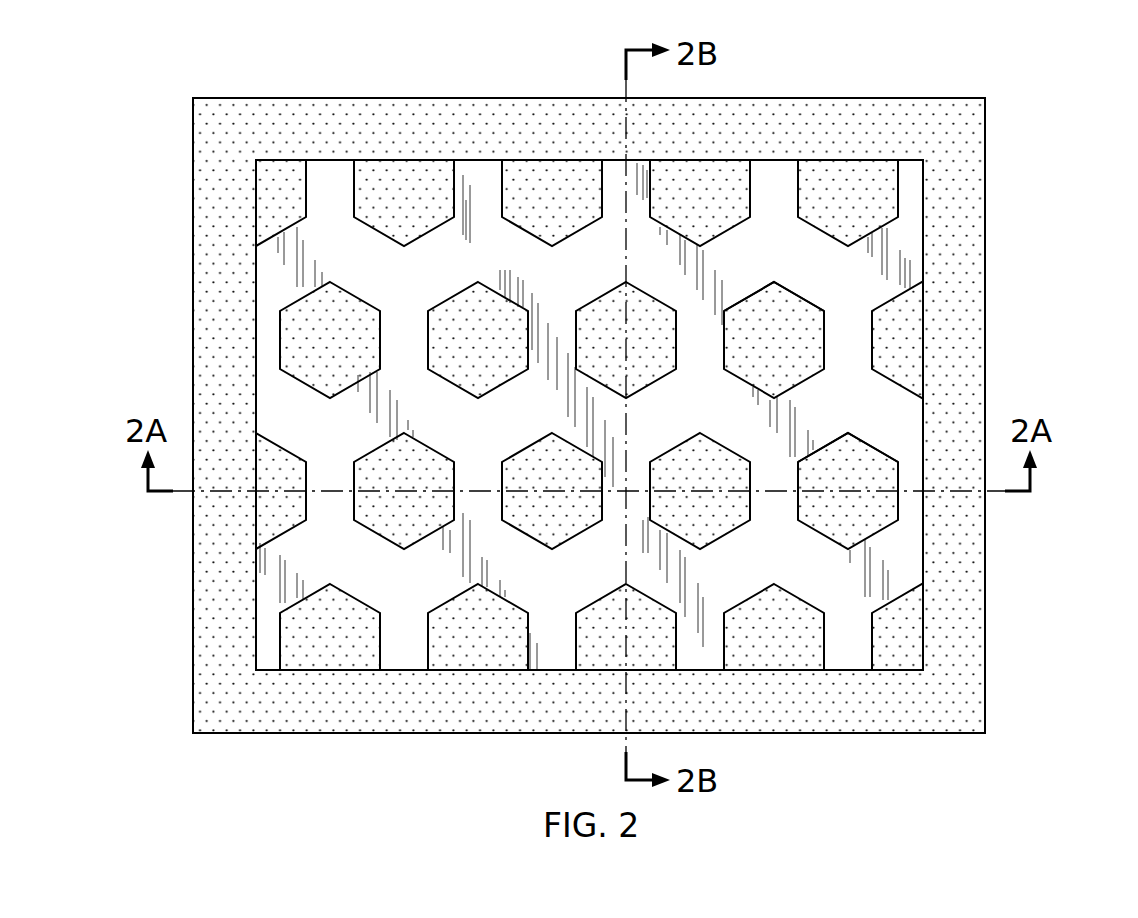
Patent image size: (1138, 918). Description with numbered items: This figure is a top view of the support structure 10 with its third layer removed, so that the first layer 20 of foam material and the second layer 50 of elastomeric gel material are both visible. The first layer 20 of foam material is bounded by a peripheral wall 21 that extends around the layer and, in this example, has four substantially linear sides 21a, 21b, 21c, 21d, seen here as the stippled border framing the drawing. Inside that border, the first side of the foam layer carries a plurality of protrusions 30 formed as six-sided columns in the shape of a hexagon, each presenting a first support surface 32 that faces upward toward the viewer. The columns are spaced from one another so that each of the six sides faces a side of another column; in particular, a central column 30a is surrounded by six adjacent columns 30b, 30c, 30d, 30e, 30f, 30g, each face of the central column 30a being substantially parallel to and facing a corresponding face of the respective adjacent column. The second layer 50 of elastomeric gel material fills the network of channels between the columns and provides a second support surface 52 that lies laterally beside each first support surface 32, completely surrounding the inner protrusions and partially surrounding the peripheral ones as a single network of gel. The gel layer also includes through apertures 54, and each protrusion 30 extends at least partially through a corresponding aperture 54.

The support structure 10 is at (603, 419).
The first layer of foam material 20 is at (626, 406).
The peripheral wall 21 is at (595, 406).
The side of peripheral wall 21a is at (802, 97).
The side of peripheral wall 21b is at (985, 247).
The side of peripheral wall 21c is at (492, 733).
The side of peripheral wall 21d is at (210, 638).
The second layer of elastomeric gel material 50 is at (484, 168).
The second support surface 52 is at (379, 282).
The through apertures 54 is at (768, 291).
The protrusions 30 is at (808, 308).
The central column 30a is at (531, 482).
The adjacent column 30b is at (593, 353).
The adjacent column 30c is at (678, 482).
The adjacent column 30d is at (605, 653).
The adjacent column 30e is at (498, 653).
The adjacent column 30f is at (384, 482).
The adjacent column 30g is at (457, 353).
The first support surface 32 is at (316, 353).